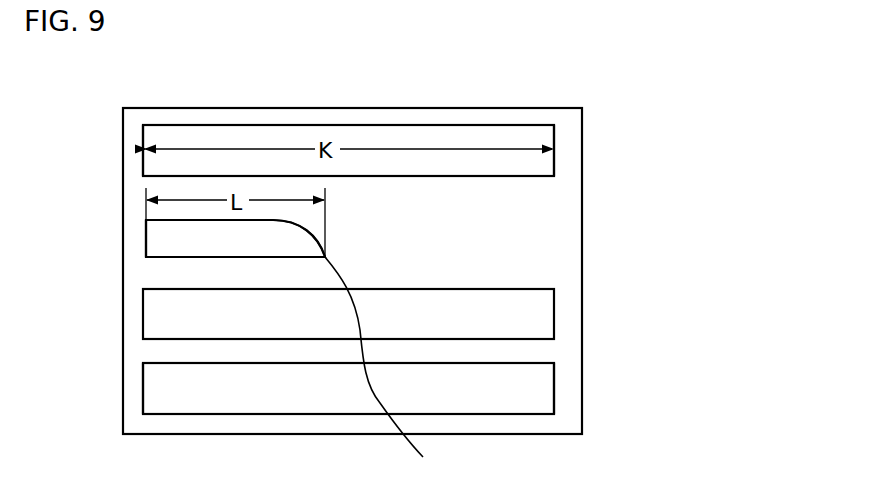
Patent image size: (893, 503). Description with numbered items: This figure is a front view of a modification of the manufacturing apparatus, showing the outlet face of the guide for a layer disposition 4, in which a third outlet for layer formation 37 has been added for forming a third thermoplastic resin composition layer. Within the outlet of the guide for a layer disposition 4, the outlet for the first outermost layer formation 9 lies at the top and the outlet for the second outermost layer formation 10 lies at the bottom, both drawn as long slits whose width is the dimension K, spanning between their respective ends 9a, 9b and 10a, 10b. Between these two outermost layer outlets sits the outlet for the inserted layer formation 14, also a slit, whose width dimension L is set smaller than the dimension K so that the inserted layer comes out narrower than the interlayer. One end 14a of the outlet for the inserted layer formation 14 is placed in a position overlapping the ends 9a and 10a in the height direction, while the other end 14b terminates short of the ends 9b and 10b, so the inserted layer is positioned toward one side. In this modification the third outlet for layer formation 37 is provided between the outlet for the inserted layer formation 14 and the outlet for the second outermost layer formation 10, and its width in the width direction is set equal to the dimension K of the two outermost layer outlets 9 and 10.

The guide for a layer disposition 4 is at (460, 106).
The outlet for the first outermost layer formation 9 is at (346, 124).
The end of the outlet for the first outermost layer formation 9a is at (143, 149).
The end of the outlet for the first outermost layer formation 9b is at (554, 141).
The outlet for the inserted layer formation 14 is at (160, 262).
The end of the outlet for the inserted layer formation 14a is at (143, 233).
The end of the outlet for the inserted layer formation 14b is at (363, 354).
The third outlet for layer formation 37 is at (233, 339).
The outlet for the second outermost layer formation 10 is at (323, 414).
The end of the outlet for the second outermost layer formation 10a is at (143, 395).
The end of the outlet for the second outermost layer formation 10b is at (554, 392).